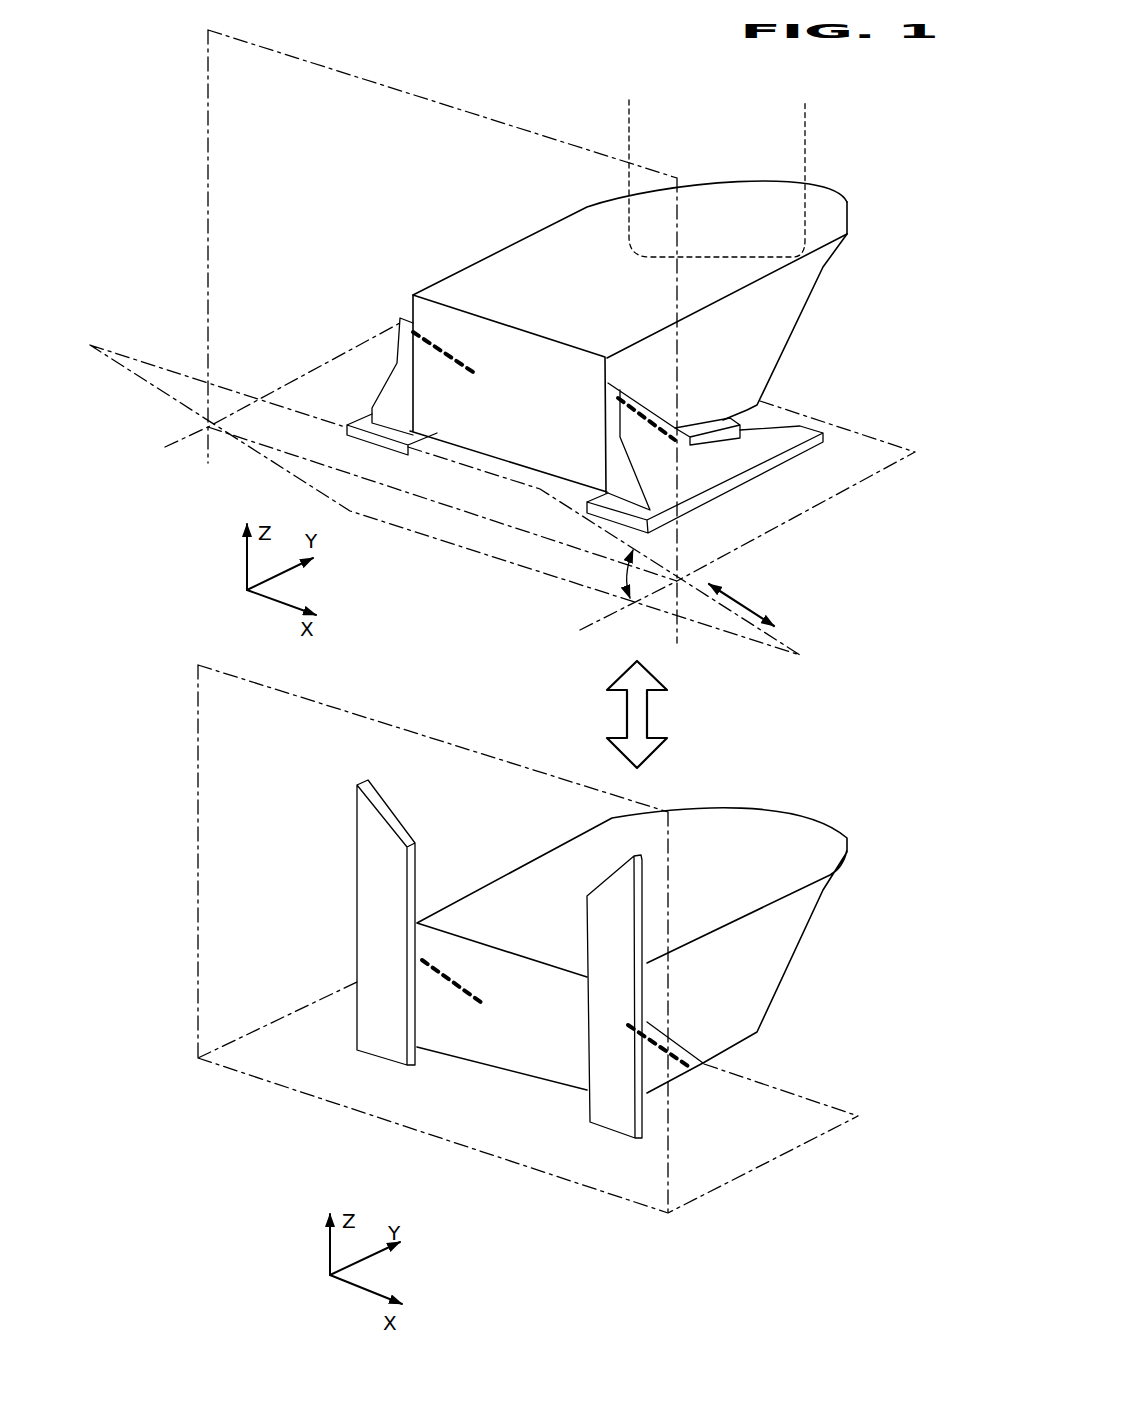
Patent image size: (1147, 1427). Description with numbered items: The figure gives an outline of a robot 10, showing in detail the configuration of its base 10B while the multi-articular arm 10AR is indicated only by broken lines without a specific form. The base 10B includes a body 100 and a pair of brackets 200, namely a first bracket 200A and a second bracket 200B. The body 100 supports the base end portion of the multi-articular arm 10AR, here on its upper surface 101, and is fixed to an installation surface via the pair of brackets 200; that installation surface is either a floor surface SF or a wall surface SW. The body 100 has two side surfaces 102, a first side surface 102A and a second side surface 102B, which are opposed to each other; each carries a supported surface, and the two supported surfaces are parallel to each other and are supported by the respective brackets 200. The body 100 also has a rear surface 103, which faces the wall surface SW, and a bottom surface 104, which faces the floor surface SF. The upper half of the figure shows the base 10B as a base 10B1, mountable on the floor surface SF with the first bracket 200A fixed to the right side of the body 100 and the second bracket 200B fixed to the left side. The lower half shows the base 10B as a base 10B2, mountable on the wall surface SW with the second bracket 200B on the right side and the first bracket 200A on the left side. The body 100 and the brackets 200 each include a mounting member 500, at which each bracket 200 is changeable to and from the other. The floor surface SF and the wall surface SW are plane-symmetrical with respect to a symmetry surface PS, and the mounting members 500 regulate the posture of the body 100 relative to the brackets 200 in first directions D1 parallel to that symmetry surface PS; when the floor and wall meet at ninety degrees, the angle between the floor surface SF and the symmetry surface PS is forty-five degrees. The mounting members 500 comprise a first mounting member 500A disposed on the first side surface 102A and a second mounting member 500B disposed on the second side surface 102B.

The robot 10 is at (569, 644).
The multi-articular arm 10AR is at (630, 122).
The base 10B is at (569, 698).
The base 10B1 is at (666, 619).
The base 10B2 is at (560, 714).
The body 100 is at (666, 627).
The upper surface 101 is at (810, 222).
The side surfaces 102 is at (630, 269).
The first side surface 102A is at (718, 318).
The second side surface 102B is at (487, 256).
The rear surface 103 is at (540, 348).
The bottom surface 104 is at (518, 458).
The brackets 200 is at (560, 714).
The first bracket 200A is at (574, 622).
The second bracket 200B is at (364, 377).
The mounting member 500 is at (615, 622).
The first mounting member 500A is at (680, 427).
The second mounting member 500B is at (438, 330).
The wall surface SW is at (200, 208).
The floor surface SF is at (868, 488).
The symmetry surface PS is at (170, 363).
The first directions D1 is at (727, 612).